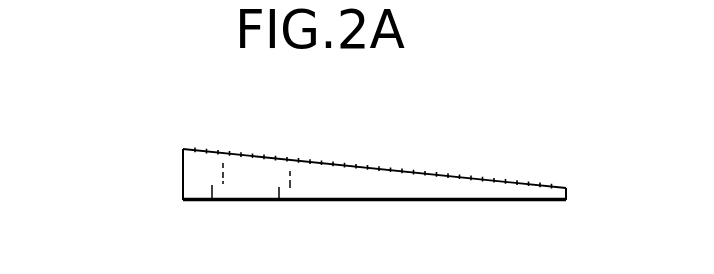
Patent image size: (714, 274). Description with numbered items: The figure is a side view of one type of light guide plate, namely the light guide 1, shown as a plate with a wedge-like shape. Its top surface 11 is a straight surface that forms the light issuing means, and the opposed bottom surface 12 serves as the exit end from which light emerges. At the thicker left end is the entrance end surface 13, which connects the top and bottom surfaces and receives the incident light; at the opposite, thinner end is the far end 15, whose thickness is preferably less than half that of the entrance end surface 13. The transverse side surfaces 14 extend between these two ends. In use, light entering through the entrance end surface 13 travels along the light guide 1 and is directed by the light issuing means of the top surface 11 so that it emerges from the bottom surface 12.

The light guide 1 is at (108, 155).
The top surface 11 is at (342, 165).
The bottom surface 12 is at (256, 203).
The entrance end surface 13 is at (183, 181).
The transverse side surfaces 14 is at (393, 190).
The far end 15 is at (567, 193).